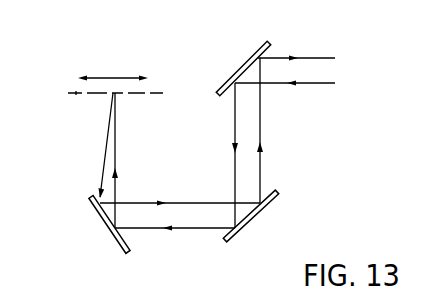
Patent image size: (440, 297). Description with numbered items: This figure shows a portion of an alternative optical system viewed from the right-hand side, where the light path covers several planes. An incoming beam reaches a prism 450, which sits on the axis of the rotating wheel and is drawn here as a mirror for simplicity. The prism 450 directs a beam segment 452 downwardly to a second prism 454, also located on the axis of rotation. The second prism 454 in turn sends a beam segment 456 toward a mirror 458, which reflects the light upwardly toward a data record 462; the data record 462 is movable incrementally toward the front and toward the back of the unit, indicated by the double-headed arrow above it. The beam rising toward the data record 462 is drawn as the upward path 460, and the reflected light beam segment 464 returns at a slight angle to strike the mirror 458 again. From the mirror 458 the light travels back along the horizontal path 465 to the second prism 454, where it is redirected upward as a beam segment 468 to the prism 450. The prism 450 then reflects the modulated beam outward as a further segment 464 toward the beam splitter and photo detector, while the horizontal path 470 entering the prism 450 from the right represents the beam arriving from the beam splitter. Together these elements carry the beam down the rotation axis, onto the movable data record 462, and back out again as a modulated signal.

The prism 450 is at (252, 59).
The beam segment 452 is at (233, 125).
The second prism 454 is at (277, 201).
The beam segment 456 is at (206, 229).
The mirror 458 is at (107, 237).
The incident beam 460 is at (116, 141).
The data record 462 is at (76, 100).
The reflected light beam segment 464 is at (106, 153).
The beam 465 is at (221, 203).
The beam segment 468 is at (261, 133).
The input beam 470 is at (328, 81).